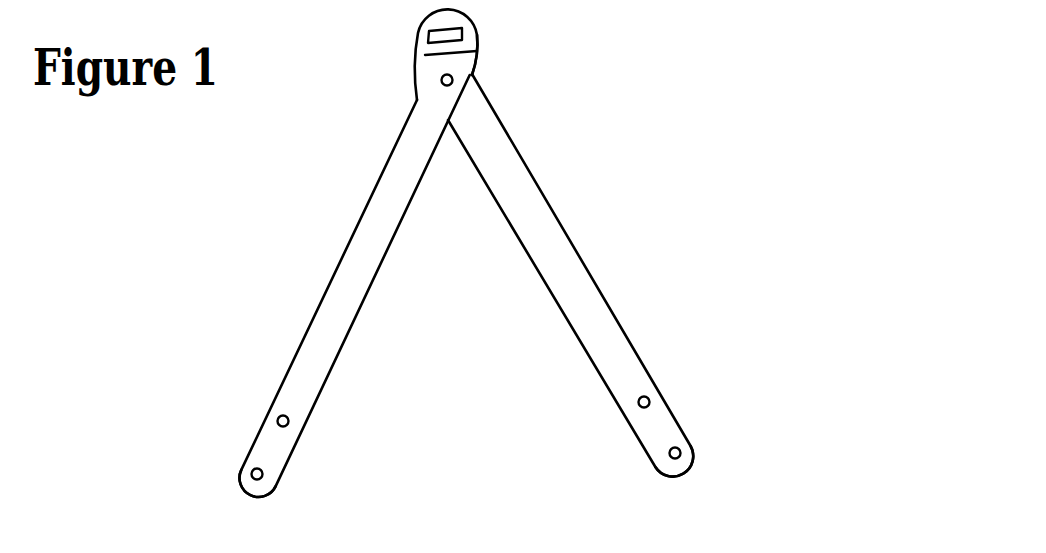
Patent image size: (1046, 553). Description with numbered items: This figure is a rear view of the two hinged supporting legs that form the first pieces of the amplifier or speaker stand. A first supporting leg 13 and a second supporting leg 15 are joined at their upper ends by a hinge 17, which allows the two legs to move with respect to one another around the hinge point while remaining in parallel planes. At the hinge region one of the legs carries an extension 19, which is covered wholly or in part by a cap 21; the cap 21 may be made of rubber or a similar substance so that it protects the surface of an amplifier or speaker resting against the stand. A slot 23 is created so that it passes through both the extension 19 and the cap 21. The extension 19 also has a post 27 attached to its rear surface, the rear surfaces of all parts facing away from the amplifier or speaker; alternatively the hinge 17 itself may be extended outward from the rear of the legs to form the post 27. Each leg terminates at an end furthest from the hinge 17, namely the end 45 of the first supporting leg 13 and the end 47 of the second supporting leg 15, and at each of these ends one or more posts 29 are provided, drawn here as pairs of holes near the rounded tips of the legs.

The first supporting leg 13 is at (287, 372).
The second supporting leg 15 is at (548, 203).
The hinge 17 is at (477, 63).
The extension 19 is at (420, 63).
The cap 21 is at (420, 33).
The slot 23 is at (473, 32).
The post 27 is at (441, 84).
The posts 29 is at (277, 420).
The end of first supporting leg 45 is at (263, 497).
The end of second supporting leg 47 is at (680, 480).